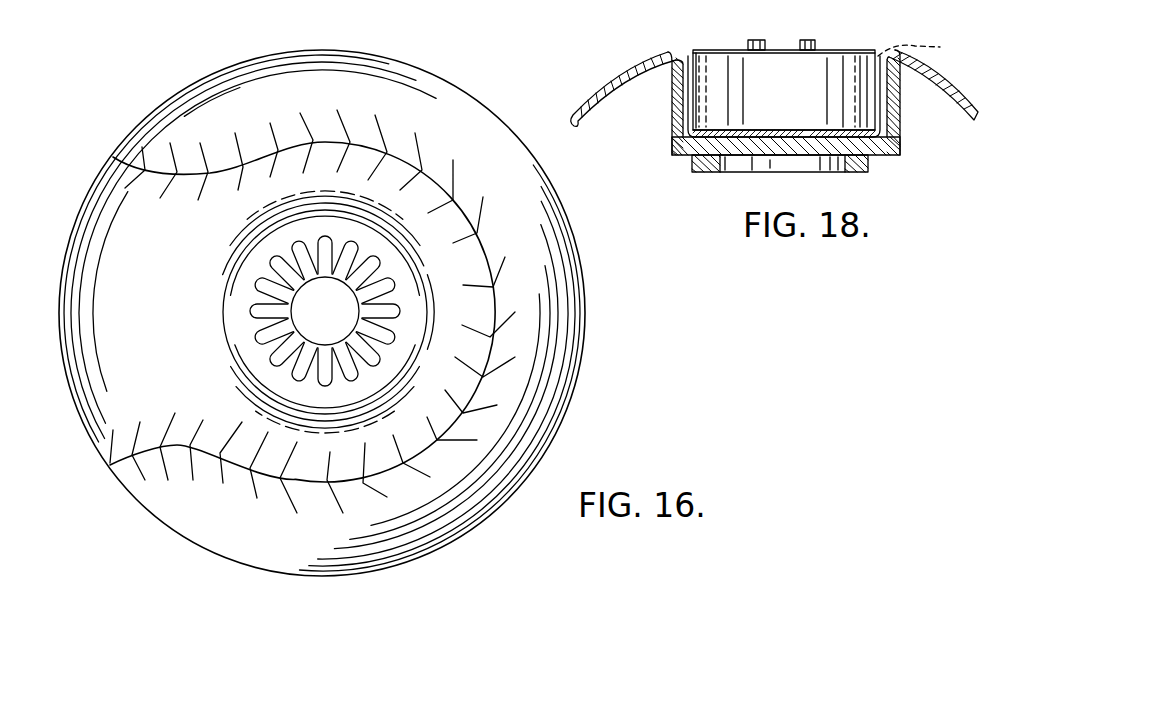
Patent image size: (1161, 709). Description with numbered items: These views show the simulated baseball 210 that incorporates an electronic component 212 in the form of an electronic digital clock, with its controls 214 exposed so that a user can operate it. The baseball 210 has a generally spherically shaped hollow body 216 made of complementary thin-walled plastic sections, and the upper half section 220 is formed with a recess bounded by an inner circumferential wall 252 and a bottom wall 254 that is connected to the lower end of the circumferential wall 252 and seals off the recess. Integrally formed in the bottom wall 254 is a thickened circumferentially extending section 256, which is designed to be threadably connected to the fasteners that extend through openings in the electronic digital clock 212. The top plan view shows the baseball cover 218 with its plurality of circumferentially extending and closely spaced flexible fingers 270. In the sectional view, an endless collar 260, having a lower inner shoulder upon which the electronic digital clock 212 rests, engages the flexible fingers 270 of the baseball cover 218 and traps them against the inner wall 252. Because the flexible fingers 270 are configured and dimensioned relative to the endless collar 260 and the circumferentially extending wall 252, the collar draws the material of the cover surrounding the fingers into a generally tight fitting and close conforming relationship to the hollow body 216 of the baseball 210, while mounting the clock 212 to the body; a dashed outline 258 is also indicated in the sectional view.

In FIG. 16, the baseball 210 is at (202, 78).
In FIG. 16, the baseball cover 218 is at (355, 72).
In FIG. 16, the flexible fingers 270 is at (320, 266).
In FIG. 18, the flexible fingers 270 is at (673, 108).
In FIG. 18, the electronic component 212 is at (805, 82).
In FIG. 18, the controls 214 is at (813, 42).
In FIG. 18, the hollow body 216 is at (643, 64).
In FIG. 18, the upper half section 220 is at (623, 86).
In FIG. 18, the inner circumferential wall 252 is at (888, 110).
In FIG. 18, the bottom wall 254 is at (817, 149).
In FIG. 18, the thickened circumferentially extending section 256 is at (858, 160).
In FIG. 18, the cover (phantom) 258 is at (930, 47).
In FIG. 18, the endless collar 260 is at (684, 128).